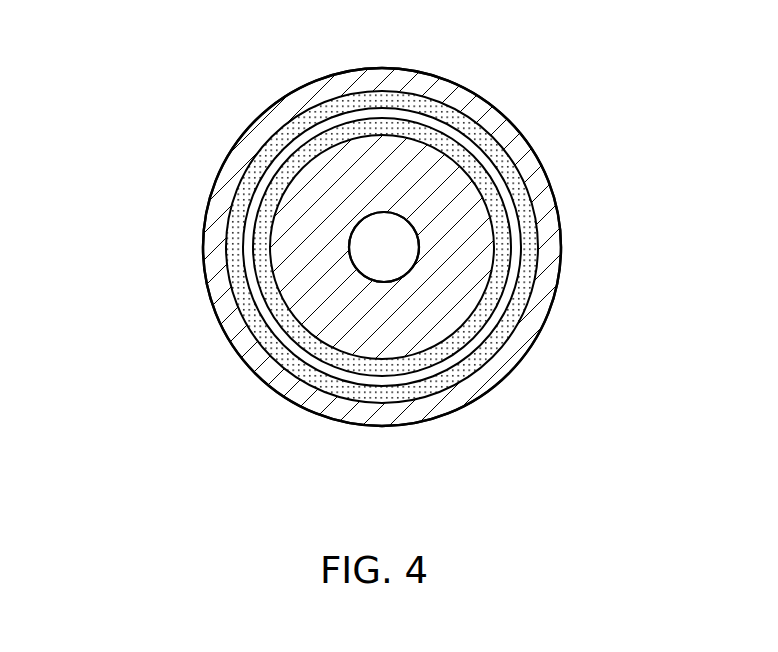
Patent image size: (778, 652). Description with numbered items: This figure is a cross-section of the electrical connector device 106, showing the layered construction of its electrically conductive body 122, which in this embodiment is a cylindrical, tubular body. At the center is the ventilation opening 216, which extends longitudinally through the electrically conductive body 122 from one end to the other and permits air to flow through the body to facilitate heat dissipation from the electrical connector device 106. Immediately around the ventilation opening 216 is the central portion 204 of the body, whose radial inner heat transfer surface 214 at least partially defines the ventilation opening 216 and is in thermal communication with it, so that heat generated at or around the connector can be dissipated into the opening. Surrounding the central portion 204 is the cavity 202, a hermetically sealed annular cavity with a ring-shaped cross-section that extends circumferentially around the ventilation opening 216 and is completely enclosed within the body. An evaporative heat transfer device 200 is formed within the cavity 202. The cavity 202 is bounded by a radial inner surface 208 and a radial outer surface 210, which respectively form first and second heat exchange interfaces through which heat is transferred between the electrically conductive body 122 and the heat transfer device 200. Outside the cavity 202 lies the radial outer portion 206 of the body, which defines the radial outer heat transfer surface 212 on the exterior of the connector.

The electrical connector device 106 is at (158, 53).
The electrically conductive body 122 is at (495, 118).
The evaporative heat transfer device 200 is at (330, 96).
The cavity 202 is at (290, 343).
The central portion 204 is at (448, 325).
The radial outer portion 206 is at (533, 320).
The radial inner surface 208 is at (352, 362).
The radial outer surface 210 is at (445, 391).
The radial outer heat transfer surface 212 is at (218, 174).
The radial inner heat transfer surface 214 is at (355, 233).
The ventilation opening 216 is at (383, 268).